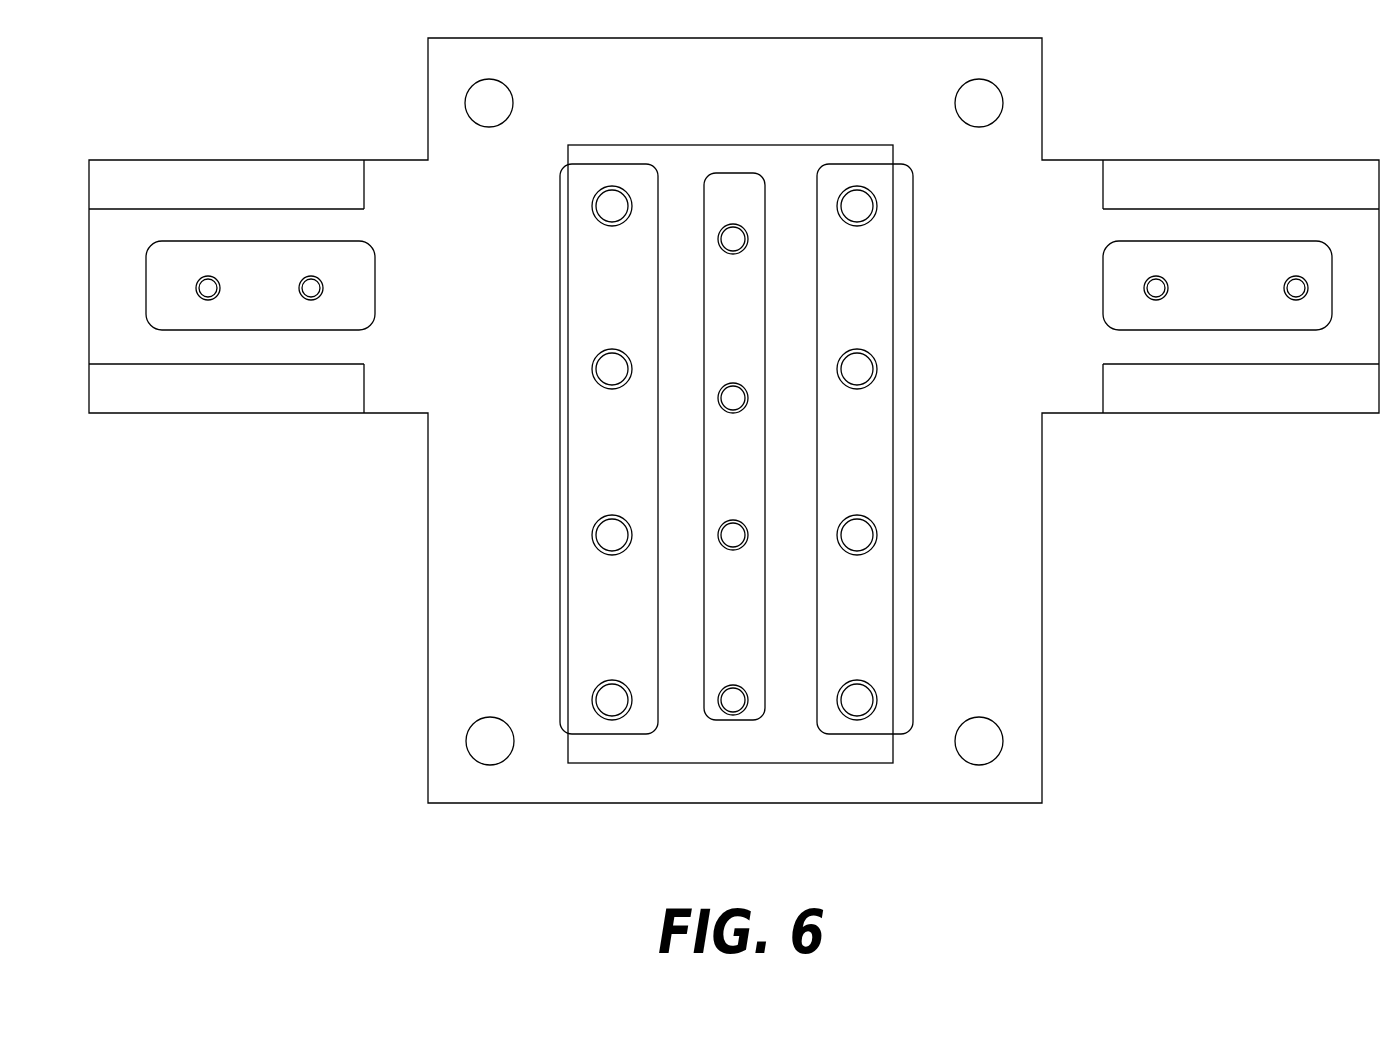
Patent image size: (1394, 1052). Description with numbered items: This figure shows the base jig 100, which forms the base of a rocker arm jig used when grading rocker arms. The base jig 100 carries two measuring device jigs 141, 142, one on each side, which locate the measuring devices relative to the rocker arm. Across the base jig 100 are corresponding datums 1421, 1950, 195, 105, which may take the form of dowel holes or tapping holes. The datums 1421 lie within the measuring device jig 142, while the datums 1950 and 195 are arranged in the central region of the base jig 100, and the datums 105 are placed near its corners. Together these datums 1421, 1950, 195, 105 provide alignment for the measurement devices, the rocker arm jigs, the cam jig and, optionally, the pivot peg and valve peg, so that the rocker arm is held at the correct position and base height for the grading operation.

The base jig 100 is at (1042, 655).
The datums 105 is at (466, 740).
The measuring device jig 141 is at (248, 413).
The measuring device jig 142 is at (1309, 413).
The datums 1421 is at (1156, 300).
The datums 195 is at (730, 715).
The datums 1950 is at (860, 715).